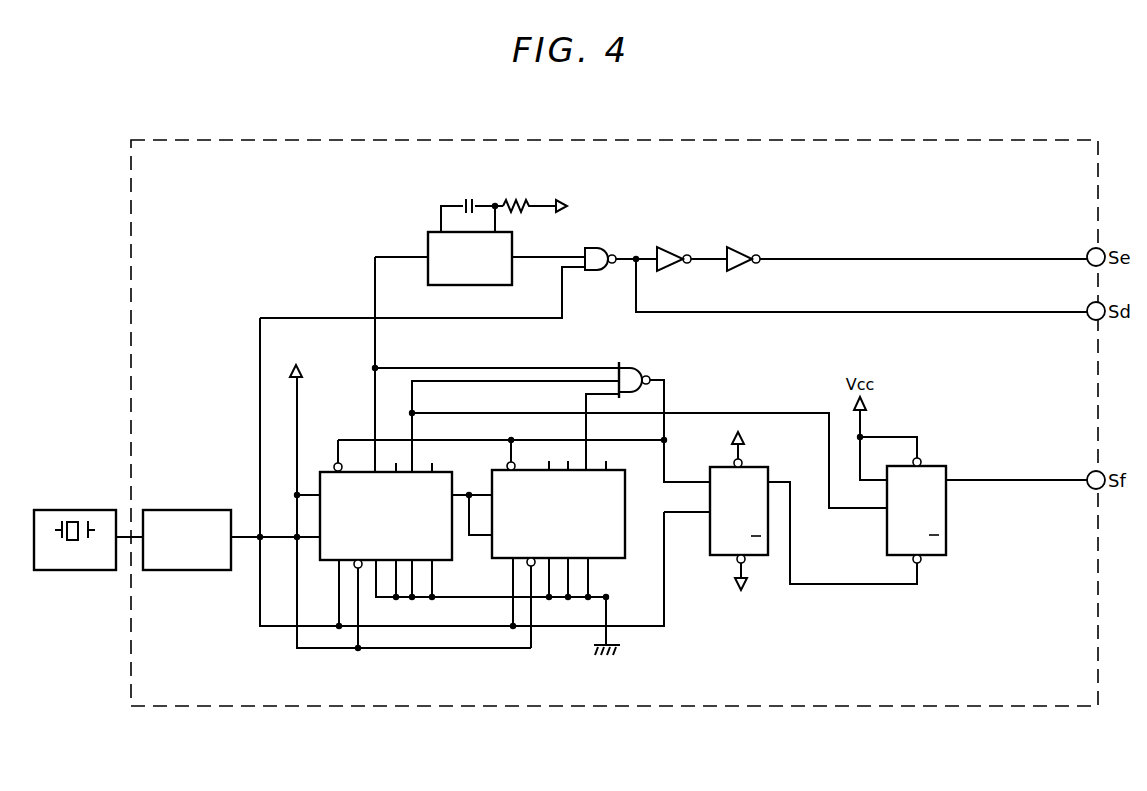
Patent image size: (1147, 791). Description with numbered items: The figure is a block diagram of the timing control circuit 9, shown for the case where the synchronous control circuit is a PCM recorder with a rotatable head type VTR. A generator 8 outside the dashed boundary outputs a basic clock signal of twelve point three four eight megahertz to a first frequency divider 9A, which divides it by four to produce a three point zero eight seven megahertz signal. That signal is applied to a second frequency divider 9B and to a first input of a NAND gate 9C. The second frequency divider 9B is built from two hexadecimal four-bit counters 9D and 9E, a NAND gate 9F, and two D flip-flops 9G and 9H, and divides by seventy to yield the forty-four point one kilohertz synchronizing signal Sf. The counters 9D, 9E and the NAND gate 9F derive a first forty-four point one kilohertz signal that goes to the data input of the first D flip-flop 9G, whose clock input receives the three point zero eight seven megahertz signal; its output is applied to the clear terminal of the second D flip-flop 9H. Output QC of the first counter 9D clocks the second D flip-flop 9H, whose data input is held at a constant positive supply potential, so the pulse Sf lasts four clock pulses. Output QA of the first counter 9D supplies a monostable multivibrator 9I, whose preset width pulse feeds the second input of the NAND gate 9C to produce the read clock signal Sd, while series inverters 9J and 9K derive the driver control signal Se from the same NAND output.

The generator 8 is at (73, 510).
The timing control circuit 9 is at (836, 140).
The first frequency divider 9A is at (190, 510).
The second frequency divider 9B is at (650, 641).
The NAND gate 9C is at (598, 248).
The first counter 9D is at (326, 468).
The second counter 9E is at (627, 552).
The NAND gate 9F is at (640, 370).
The first D flip-flop 9G is at (710, 543).
The second D flip-flop 9H is at (947, 532).
The monostable multivibrator 9I is at (428, 240).
The inverter 9J is at (670, 247).
The inverter 9K is at (741, 247).